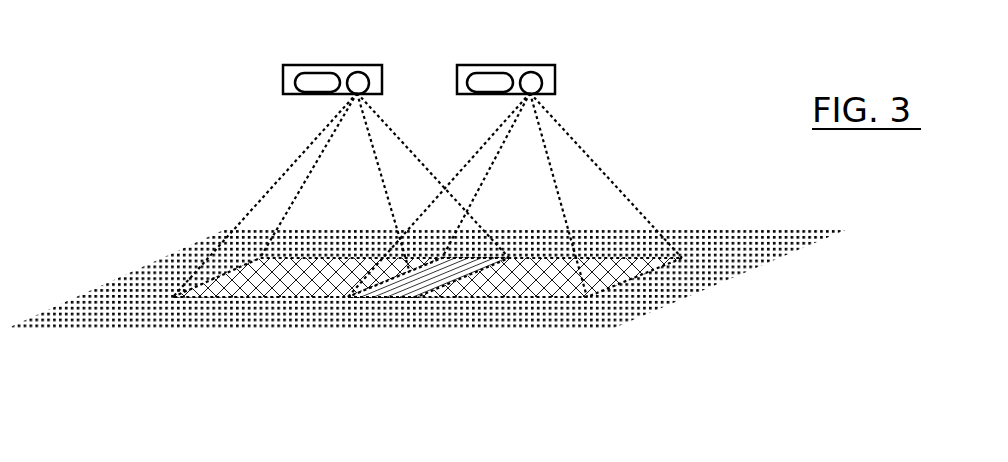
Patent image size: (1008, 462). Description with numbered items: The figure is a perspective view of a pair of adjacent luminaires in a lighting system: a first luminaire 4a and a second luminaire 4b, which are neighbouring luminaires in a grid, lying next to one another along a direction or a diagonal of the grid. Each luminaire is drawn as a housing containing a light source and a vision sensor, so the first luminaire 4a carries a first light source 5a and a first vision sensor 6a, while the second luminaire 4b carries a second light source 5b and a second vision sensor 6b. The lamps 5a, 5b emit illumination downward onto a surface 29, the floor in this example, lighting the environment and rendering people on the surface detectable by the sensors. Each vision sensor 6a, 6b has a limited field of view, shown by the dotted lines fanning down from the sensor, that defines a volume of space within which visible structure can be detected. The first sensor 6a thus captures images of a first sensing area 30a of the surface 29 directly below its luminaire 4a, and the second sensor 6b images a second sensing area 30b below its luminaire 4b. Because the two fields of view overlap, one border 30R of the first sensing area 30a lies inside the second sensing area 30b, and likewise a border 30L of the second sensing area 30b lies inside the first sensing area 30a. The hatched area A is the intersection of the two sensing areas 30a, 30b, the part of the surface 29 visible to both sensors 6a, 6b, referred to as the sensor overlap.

The surface 29 is at (86, 307).
The first sensing area 30a is at (225, 297).
The second sensing area 30b is at (500, 298).
The border of second sensing area 30L is at (400, 280).
The border of first sensing area 30R is at (463, 277).
The sensor overlap area A is at (423, 289).
The first luminaire 4a is at (290, 65).
The first light source 5a is at (317, 73).
The first vision sensor 6a is at (358, 72).
The second luminaire 4b is at (464, 65).
The second light source 5b is at (491, 73).
The second vision sensor 6b is at (531, 72).